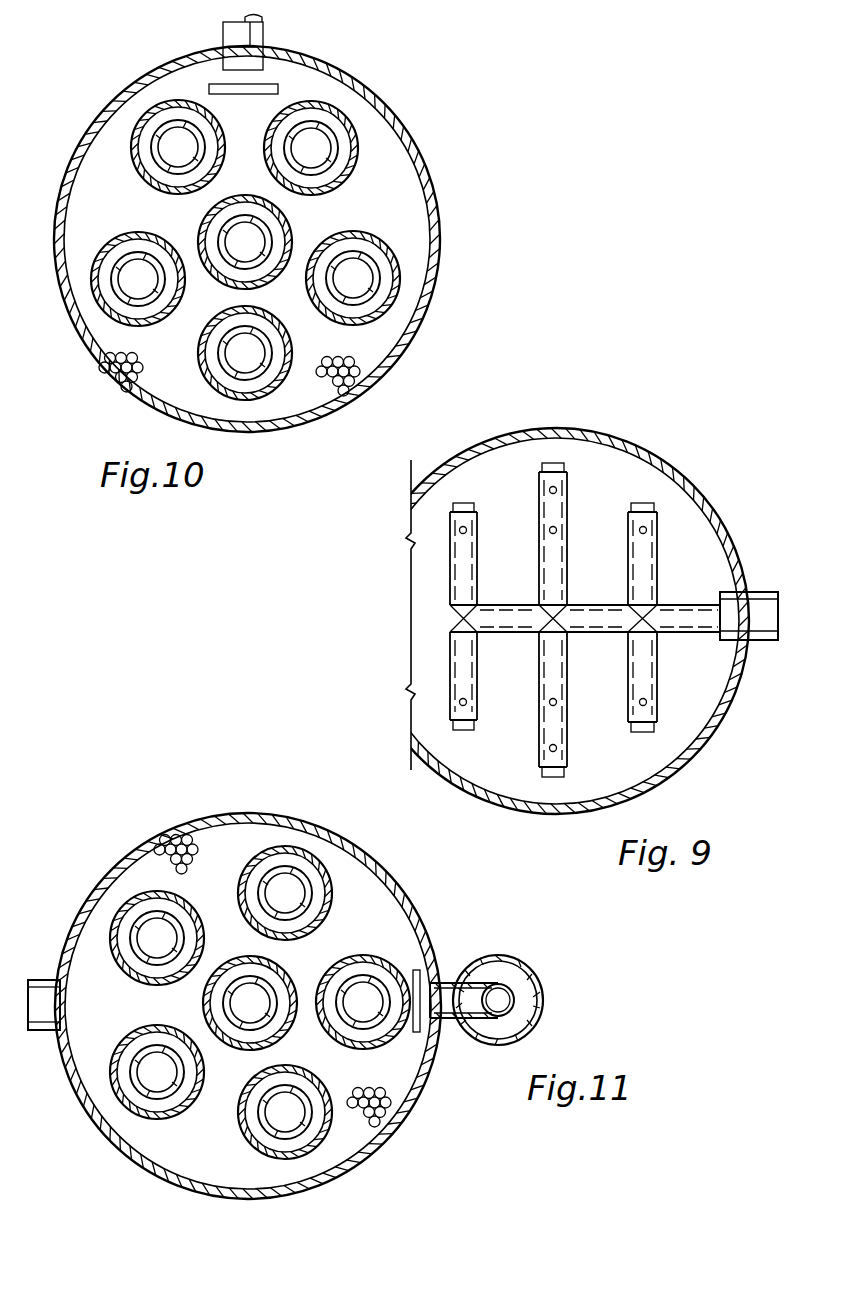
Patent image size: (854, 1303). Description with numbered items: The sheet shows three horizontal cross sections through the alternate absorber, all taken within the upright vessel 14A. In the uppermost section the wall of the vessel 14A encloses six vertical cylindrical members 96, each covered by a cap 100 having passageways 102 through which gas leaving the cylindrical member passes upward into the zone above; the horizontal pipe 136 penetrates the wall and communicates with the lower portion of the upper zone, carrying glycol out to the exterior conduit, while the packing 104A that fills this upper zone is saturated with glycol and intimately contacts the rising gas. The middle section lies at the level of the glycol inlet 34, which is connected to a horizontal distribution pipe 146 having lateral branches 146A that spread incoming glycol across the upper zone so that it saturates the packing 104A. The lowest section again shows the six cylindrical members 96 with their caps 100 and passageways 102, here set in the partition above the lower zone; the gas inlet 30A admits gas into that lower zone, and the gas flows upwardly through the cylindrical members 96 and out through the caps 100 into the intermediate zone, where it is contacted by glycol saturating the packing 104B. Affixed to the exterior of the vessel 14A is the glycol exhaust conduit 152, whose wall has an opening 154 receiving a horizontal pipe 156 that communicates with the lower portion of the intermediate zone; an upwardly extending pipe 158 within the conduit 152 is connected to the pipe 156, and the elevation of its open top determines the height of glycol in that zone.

In FIG. 10, the upright vessel 14A is at (425, 183).
In FIG. 9, the upright vessel 14A is at (725, 522).
In FIG. 11, the upright vessel 14A is at (413, 893).
In FIG. 10, the horizontal pipe 136 is at (265, 40).
In FIG. 10, the cap 100 is at (200, 225).
In FIG. 11, the cap 100 is at (288, 985).
In FIG. 10, the vertical cylindrical member 96 is at (356, 254).
In FIG. 11, the vertical cylindrical member 96 is at (300, 1088).
In FIG. 10, the passageway 102 is at (247, 251).
In FIG. 11, the passageway 102 is at (262, 1004).
In FIG. 10, the packing 104A is at (357, 376).
In FIG. 11, the packing 104B is at (395, 1120).
In FIG. 9, the glycol inlet 34 is at (757, 594).
In FIG. 9, the horizontal distribution pipe 146 is at (668, 624).
In FIG. 9, the lateral branch 146A is at (638, 570).
In FIG. 11, the gas inlet 30A is at (63, 1004).
In FIG. 11, the glycol exhaust conduit 152 is at (545, 1000).
In FIG. 11, the opening 154 is at (452, 984).
In FIG. 11, the horizontal pipe 156 is at (460, 1025).
In FIG. 11, the upwardly extending pipe 158 is at (511, 989).